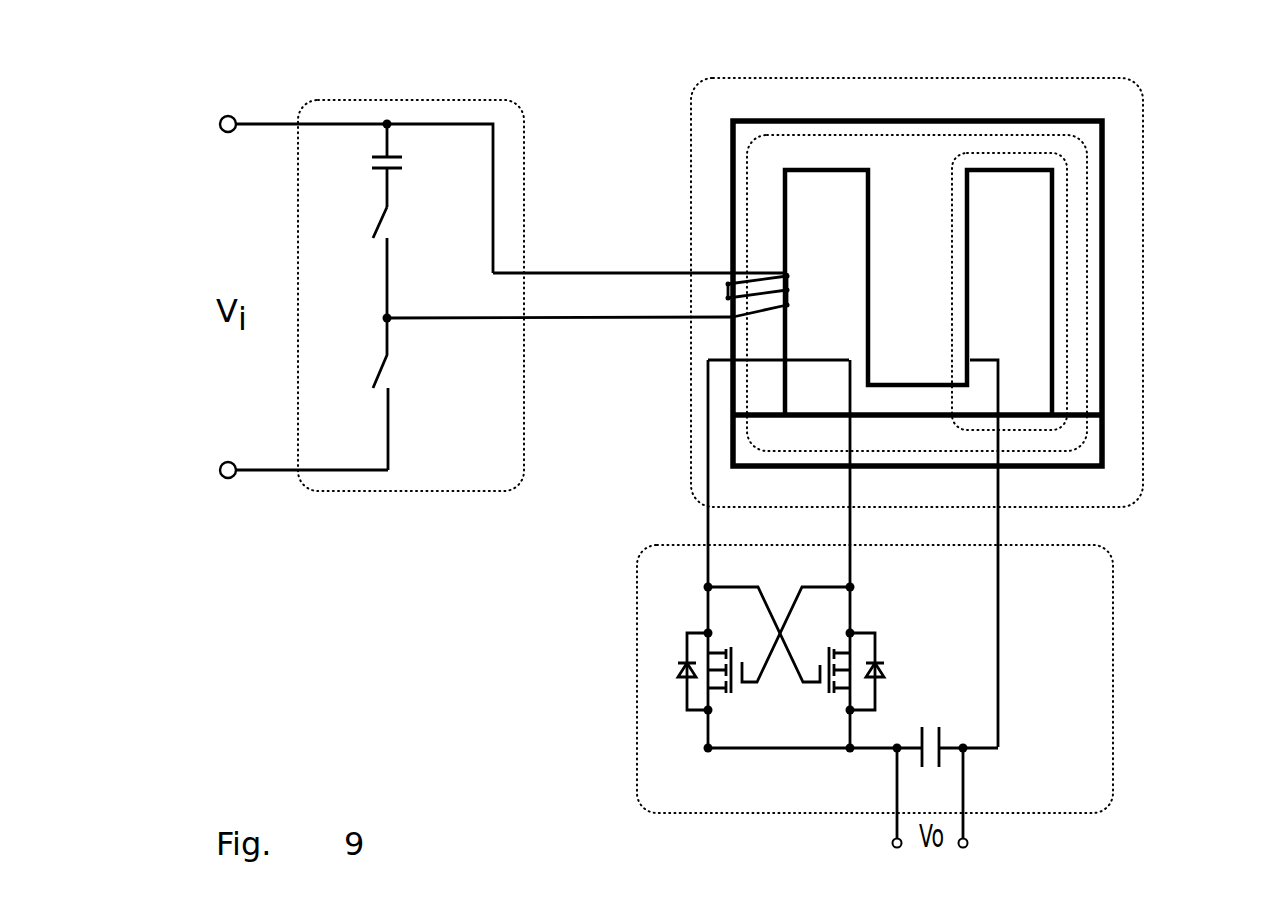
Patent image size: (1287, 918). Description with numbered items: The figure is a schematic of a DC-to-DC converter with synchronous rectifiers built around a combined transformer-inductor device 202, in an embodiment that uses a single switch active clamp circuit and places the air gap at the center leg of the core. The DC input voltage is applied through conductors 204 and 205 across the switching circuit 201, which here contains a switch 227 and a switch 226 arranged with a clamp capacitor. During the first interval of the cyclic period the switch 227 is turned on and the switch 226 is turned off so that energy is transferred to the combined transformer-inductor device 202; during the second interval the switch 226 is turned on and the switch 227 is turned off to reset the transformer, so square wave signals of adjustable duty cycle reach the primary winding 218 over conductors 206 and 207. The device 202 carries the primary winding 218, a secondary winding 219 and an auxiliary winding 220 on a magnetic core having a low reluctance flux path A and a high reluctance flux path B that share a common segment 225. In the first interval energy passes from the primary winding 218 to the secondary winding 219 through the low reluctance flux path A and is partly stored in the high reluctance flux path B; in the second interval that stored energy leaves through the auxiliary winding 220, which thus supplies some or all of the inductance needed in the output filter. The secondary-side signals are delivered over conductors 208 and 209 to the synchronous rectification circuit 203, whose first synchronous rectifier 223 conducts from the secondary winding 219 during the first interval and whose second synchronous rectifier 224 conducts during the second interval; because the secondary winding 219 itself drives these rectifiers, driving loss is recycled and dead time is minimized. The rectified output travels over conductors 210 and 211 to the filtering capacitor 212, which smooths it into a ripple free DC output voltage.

The switching circuit 201 is at (427, 108).
The combined transformer-inductor device 202 is at (1021, 97).
The synchronous rectification circuit 203 is at (1102, 748).
The conductor 204 is at (260, 120).
The conductor 205 is at (263, 474).
The conductor 206 is at (607, 270).
The conductor 207 is at (610, 319).
The conductor 208 is at (852, 556).
The conductor 209 is at (707, 556).
The conductor 210 is at (1000, 683).
The conductor 211 is at (877, 750).
The filtering capacitor 212 is at (936, 727).
The primary winding 218 is at (781, 295).
The secondary winding 219 is at (825, 358).
The auxiliary winding 220 is at (992, 358).
The first synchronous rectifier 223 is at (746, 665).
The second synchronous rectifier 224 is at (818, 665).
The common segment 225 is at (863, 124).
The switch 226 is at (357, 262).
The switch 227 is at (357, 394).
The low reluctance flux path A is at (1086, 172).
The high reluctance flux path B is at (1068, 244).